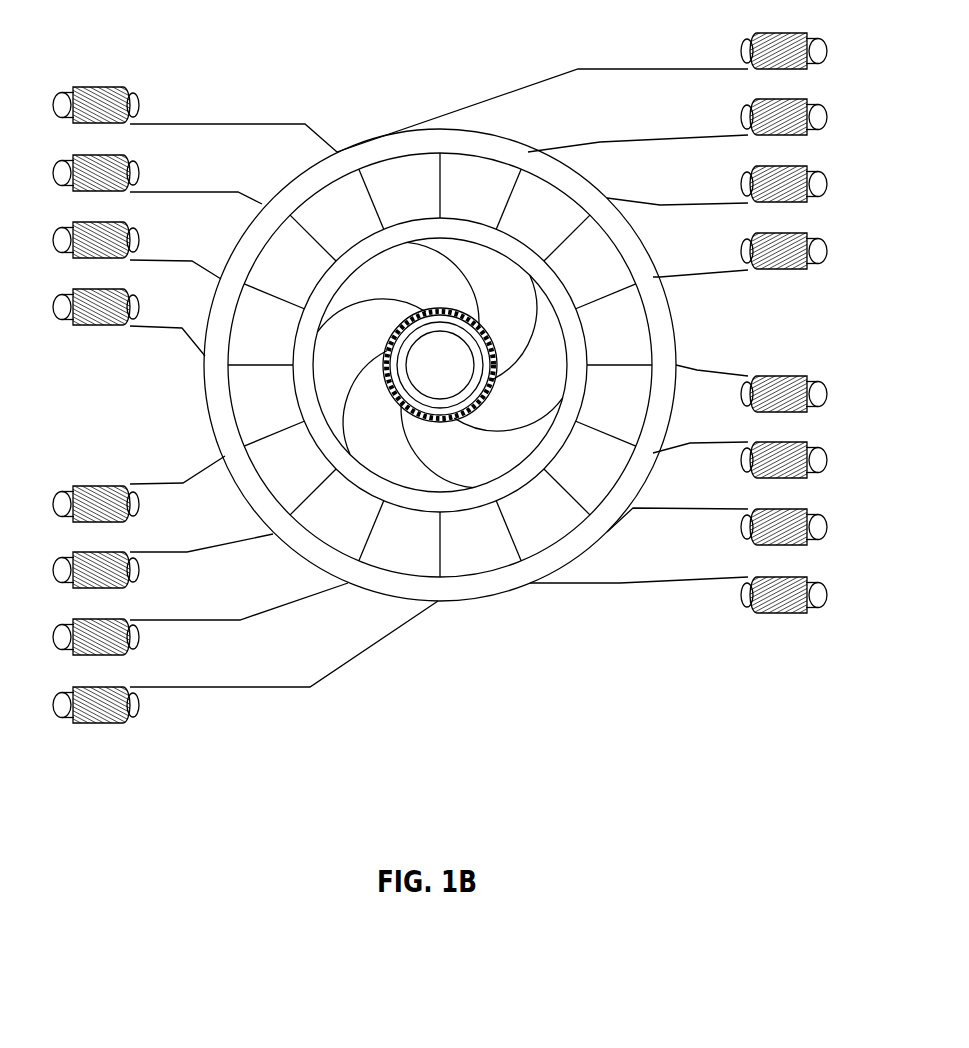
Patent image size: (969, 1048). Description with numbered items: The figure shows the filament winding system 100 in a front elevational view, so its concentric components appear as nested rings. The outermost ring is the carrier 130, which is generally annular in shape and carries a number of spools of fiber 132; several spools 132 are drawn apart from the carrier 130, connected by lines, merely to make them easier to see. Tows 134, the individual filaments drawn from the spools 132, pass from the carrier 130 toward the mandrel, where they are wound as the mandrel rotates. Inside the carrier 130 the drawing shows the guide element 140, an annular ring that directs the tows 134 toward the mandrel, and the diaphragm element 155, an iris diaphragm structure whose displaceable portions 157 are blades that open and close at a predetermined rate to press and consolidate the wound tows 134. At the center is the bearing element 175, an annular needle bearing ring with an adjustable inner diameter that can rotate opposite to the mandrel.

The system 100 is at (194, 796).
The carrier 130 is at (390, 148).
The spools of fiber 132 is at (800, 547).
The tows 134 is at (602, 285).
The guide element 140 is at (383, 358).
The diaphragm element 155 is at (463, 500).
The displaceable portions 157 is at (508, 445).
The bearing element 175 is at (393, 397).